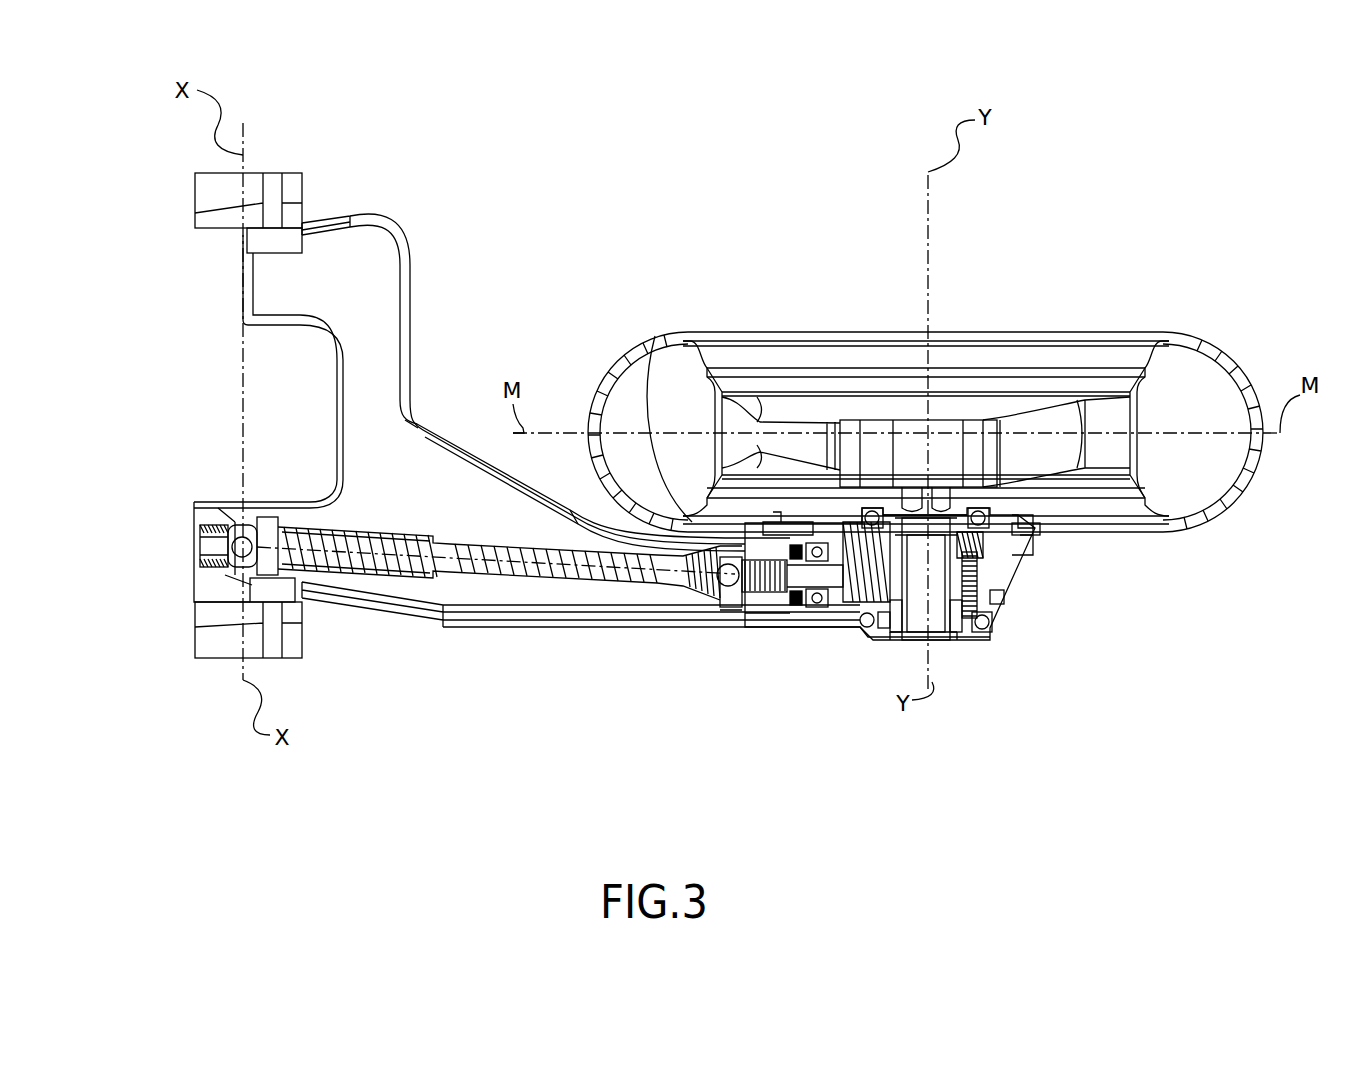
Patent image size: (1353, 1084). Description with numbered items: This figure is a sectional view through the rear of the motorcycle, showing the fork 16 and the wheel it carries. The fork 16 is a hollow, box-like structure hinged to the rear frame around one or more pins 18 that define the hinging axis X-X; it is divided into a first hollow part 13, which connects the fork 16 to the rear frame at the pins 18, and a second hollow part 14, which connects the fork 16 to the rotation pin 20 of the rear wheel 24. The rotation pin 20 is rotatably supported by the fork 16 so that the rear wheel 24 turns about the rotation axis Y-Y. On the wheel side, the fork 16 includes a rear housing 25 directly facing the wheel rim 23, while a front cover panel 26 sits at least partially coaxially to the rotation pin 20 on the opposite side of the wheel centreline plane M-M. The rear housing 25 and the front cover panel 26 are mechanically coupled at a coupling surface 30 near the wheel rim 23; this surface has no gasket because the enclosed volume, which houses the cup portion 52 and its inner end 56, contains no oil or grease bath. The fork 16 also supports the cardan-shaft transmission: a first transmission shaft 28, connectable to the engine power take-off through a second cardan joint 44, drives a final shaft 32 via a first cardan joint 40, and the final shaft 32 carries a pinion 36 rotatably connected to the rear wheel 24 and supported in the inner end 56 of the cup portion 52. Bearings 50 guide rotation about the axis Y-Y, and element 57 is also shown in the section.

The first hollow part 13 is at (490, 628).
The second hollow part 14 is at (793, 627).
The fork 16 is at (377, 267).
The pins 18 is at (275, 187).
The rotation pin 20 is at (931, 512).
The wheel rim 23 is at (780, 427).
The rear wheel 24 is at (662, 335).
The rear housing 25 is at (998, 512).
The front cover panel 26 is at (1020, 580).
The first transmission shaft 28 is at (572, 588).
The coupling surface 30 is at (755, 529).
The final shaft 32 is at (778, 592).
The pinion 36 is at (853, 600).
The first cardan joint 40 is at (727, 606).
The second cardan joint 44 is at (224, 572).
The bearings 50 is at (985, 640).
The cup portion 52 is at (887, 605).
The inner end 56 is at (868, 605).
The seal 57 is at (958, 640).